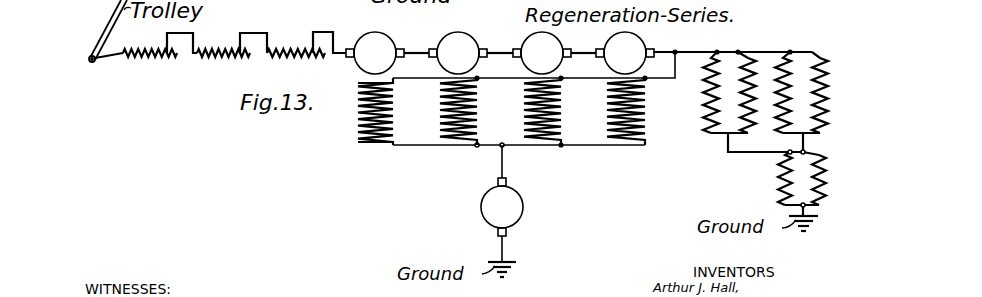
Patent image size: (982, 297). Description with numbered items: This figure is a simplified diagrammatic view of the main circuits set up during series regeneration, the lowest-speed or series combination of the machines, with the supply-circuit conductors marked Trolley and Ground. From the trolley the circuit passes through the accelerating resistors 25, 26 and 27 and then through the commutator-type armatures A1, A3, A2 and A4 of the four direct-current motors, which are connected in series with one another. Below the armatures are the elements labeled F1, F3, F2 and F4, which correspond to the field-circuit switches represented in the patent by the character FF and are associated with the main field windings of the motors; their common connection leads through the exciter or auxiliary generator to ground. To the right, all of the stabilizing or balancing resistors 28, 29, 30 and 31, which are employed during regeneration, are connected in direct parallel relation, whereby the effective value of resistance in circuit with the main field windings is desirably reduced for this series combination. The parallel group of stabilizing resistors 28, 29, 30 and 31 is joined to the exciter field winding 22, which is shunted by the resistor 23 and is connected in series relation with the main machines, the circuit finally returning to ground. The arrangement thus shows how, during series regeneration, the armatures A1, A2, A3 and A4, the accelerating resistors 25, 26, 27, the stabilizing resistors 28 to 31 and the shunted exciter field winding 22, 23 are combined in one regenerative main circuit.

The field winding 22 is at (817, 170).
The resistor 23 is at (780, 168).
The accelerating resistor 25 is at (132, 58).
The accelerating resistor 26 is at (203, 58).
The accelerating resistor 27 is at (277, 58).
The stabilizing resistor 28 is at (780, 134).
The stabilizing resistor 29 is at (819, 134).
The stabilizing resistor 30 is at (741, 100).
The stabilizing resistor 31 is at (706, 100).
The armature A1 is at (375, 53).
The armature A2 is at (542, 53).
The armature A3 is at (458, 53).
The armature A4 is at (625, 53).
The switch F1 is at (358, 123).
The switch F2 is at (525, 117).
The switch F3 is at (441, 121).
The switch F4 is at (610, 122).